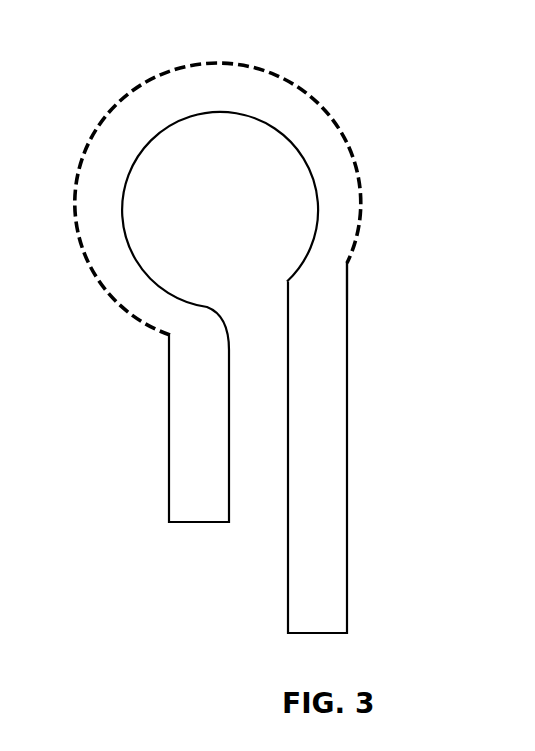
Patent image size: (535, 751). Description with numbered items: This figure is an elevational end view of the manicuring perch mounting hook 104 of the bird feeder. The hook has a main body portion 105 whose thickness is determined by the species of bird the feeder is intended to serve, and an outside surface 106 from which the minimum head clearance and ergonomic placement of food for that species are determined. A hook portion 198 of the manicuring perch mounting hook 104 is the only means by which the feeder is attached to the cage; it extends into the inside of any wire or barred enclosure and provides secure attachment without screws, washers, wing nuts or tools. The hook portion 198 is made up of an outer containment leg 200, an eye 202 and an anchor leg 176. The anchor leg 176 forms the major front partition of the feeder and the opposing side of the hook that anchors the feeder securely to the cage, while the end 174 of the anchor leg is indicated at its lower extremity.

The manicuring perch mounting hook 104 is at (96, 66).
The main body portion 105 is at (213, 97).
The outside surface 106 is at (355, 152).
The leg end 174 is at (317, 637).
The anchor leg 176 is at (327, 608).
The hook portion 198 is at (265, 430).
The outer containment leg 200 is at (177, 425).
The eye 202 is at (230, 213).